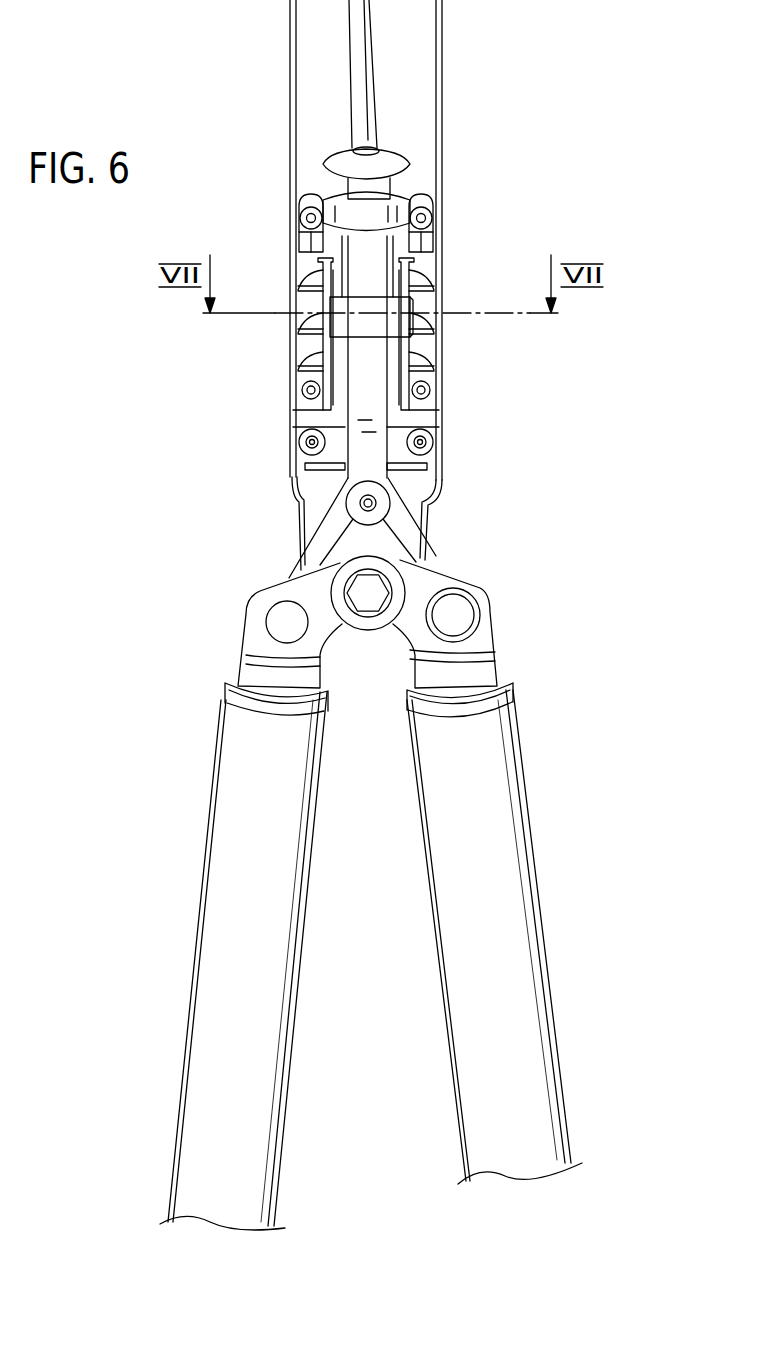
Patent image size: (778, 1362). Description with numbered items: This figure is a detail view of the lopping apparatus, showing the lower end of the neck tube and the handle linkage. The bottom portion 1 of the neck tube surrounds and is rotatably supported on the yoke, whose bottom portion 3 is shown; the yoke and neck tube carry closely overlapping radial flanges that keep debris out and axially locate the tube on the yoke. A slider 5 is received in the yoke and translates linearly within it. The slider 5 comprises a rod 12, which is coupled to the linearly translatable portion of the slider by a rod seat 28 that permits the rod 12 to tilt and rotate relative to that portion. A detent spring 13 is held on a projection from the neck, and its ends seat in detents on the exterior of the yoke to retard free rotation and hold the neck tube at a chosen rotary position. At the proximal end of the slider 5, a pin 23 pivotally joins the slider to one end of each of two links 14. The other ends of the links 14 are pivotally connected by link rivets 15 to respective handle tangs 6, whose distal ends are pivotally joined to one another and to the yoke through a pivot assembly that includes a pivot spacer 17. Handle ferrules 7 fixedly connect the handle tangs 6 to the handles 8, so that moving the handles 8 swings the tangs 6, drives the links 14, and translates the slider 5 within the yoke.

The bottom portion of neck tube 1 is at (443, 10).
The rod 12 is at (358, 42).
The rod seat 28 is at (385, 152).
The detent spring 13 is at (375, 298).
The slider 5 is at (360, 352).
The bottom portion of yoke 3 is at (307, 440).
The pin 23 is at (380, 497).
The link 14 is at (337, 547).
The pivot spacer 17 is at (378, 592).
The link rivets 15 is at (284, 620).
The handle tangs 6 is at (257, 677).
The handle ferrules 7 is at (242, 694).
The handles 8 is at (220, 884).